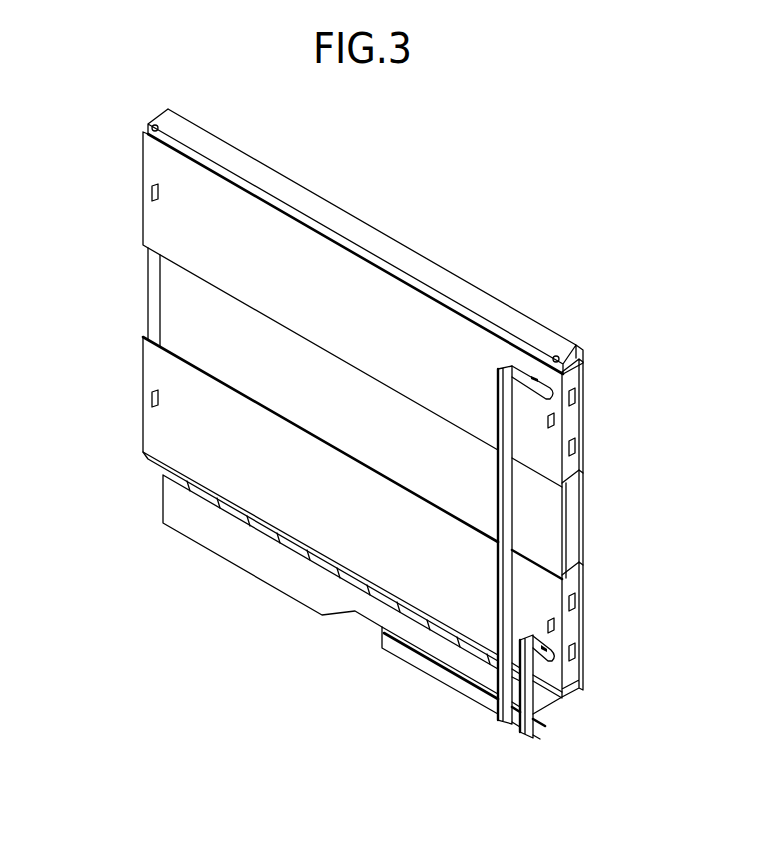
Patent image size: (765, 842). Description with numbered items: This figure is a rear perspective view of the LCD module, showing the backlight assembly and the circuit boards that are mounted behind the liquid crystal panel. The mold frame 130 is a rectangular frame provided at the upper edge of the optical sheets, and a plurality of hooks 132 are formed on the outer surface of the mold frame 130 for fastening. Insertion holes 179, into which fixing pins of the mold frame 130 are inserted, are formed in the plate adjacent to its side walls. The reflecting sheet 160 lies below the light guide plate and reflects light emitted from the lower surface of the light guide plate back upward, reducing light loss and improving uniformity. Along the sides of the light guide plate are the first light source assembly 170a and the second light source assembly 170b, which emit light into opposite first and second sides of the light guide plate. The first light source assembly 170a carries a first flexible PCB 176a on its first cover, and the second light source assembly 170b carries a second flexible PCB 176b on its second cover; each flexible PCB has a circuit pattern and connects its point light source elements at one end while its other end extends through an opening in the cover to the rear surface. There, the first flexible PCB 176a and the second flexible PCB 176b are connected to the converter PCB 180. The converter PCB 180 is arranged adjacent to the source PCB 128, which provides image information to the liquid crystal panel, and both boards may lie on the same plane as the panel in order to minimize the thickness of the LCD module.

The mold frame 130 is at (438, 272).
The insertion holes 179 is at (152, 194).
The source PCB 128 is at (248, 560).
The converter PCB 180 is at (416, 660).
The first flexible PCB 176a is at (505, 523).
The second flexible PCB 176b is at (562, 690).
The first light source assembly 170a is at (547, 437).
The second light source assembly 170b is at (552, 644).
The reflecting sheet 160 is at (538, 503).
The hooks 132 is at (577, 395).